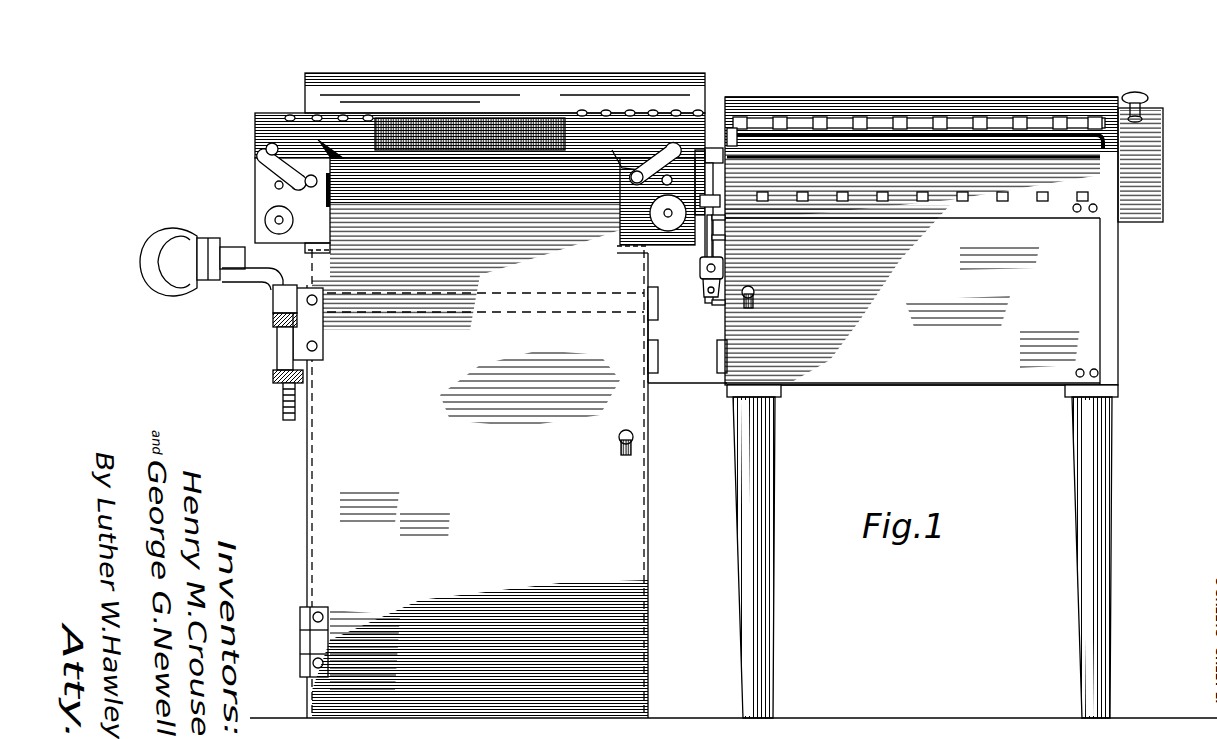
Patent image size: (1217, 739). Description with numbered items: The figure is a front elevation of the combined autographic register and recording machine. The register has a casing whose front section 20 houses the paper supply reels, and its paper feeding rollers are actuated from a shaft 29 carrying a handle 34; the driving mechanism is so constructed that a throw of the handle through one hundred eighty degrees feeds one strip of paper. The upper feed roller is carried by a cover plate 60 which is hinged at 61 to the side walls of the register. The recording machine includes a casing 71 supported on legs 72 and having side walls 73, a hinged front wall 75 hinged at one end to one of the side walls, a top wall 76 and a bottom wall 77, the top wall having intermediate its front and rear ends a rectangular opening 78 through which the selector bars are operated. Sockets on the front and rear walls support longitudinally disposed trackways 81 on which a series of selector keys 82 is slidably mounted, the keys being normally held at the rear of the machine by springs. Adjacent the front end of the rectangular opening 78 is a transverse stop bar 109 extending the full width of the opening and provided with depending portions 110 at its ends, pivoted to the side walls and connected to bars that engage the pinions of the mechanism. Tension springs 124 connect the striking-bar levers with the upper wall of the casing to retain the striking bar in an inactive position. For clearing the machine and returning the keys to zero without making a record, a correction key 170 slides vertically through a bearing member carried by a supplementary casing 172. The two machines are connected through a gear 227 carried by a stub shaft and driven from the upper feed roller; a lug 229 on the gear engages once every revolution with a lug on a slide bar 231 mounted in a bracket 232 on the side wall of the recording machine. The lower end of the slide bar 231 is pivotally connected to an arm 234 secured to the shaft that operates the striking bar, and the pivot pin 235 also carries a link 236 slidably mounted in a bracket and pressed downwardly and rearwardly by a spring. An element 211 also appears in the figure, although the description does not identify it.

The front section 20 is at (310, 452).
The shaft 29 is at (270, 312).
The handle 34 is at (243, 312).
The cover plate 60 is at (255, 135).
The hinge 61 is at (318, 192).
The casing 71 is at (925, 385).
The legs 72 is at (770, 500).
The side walls 73 is at (1118, 320).
The hinged front wall 75 is at (723, 325).
The top wall 76 is at (1045, 97).
The bottom wall 77 is at (842, 385).
The rectangular opening 78 is at (890, 113).
The trackways 81 is at (1080, 201).
The selector keys 82 is at (812, 112).
The stop bar 109 is at (948, 130).
The depending portions 110 is at (733, 137).
The tension springs 124 is at (755, 300).
The correction key 170 is at (1141, 89).
The supplementary casing 172 is at (1142, 218).
The link 211 is at (727, 220).
The gear 227 is at (708, 130).
The lug 229 is at (737, 190).
The slide bar 231 is at (710, 227).
The bracket 232 is at (733, 238).
The arm 234 is at (700, 276).
The pivot pin 235 is at (703, 295).
The link 236 is at (733, 307).